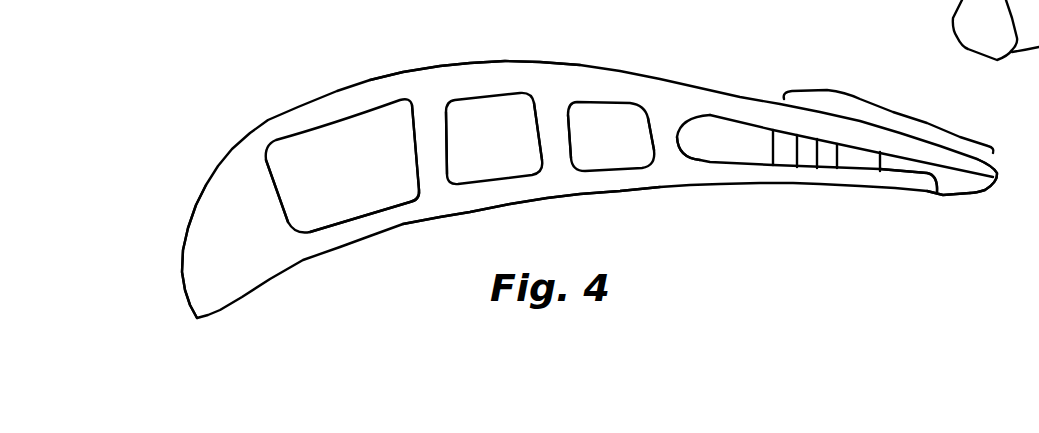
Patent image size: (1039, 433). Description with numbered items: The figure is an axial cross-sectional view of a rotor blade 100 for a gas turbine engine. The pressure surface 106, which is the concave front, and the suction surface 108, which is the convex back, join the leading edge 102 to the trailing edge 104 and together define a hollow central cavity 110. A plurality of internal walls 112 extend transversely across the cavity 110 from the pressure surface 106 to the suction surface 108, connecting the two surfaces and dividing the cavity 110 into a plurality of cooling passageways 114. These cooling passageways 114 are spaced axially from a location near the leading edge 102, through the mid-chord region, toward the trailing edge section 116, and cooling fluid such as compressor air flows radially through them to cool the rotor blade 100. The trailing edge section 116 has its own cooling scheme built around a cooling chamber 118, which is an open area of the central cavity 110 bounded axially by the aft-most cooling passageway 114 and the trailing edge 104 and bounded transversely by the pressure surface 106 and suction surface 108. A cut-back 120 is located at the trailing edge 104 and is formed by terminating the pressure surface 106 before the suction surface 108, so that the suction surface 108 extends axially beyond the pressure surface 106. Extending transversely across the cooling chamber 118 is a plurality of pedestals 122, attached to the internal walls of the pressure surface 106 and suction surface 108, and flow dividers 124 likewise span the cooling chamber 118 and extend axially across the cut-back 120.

The rotor blade 100 is at (320, 56).
The leading edge 102 is at (198, 319).
The trailing edge 104 is at (996, 178).
The pressure surface 106 is at (538, 212).
The suction surface 108 is at (443, 66).
The cavity 110 is at (393, 157).
The internal walls 112 is at (281, 235).
The cooling passageways 114 is at (289, 157).
The trailing edge section 116 is at (862, 98).
The cooling chamber 118 is at (758, 142).
The cut-back 120 is at (941, 205).
The pedestals 122 is at (785, 165).
The flow dividers 124 is at (893, 174).